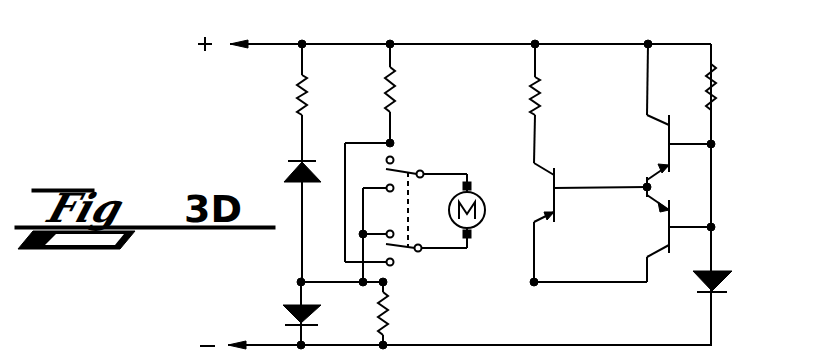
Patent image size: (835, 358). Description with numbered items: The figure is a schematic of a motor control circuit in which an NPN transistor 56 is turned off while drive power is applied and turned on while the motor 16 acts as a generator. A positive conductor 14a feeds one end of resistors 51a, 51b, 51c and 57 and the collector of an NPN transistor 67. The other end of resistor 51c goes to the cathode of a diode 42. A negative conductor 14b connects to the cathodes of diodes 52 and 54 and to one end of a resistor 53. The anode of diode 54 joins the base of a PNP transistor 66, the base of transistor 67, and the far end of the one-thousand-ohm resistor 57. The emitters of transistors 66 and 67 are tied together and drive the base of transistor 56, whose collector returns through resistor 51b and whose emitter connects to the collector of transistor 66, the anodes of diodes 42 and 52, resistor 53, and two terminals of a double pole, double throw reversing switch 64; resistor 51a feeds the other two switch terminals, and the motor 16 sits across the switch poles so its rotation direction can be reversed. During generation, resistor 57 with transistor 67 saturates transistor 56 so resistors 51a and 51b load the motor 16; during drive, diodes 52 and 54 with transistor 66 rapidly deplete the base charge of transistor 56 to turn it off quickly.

The positive conductor 14a is at (297, 42).
The negative conductor 14b is at (285, 343).
The motor 16 is at (484, 217).
The diode 42 is at (318, 181).
The resistor 51a is at (414, 93).
The resistor 51b is at (559, 103).
The resistor 51c is at (327, 102).
The diode 52 is at (296, 304).
The resistor 53 is at (401, 313).
The diode 54 is at (724, 247).
The NPN transistor 56 is at (545, 221).
The resistor 57 is at (728, 94).
The double pole, double throw reversing switch 64 is at (416, 150).
The PNP transistor 66 is at (664, 243).
The NPN transistor 67 is at (661, 163).